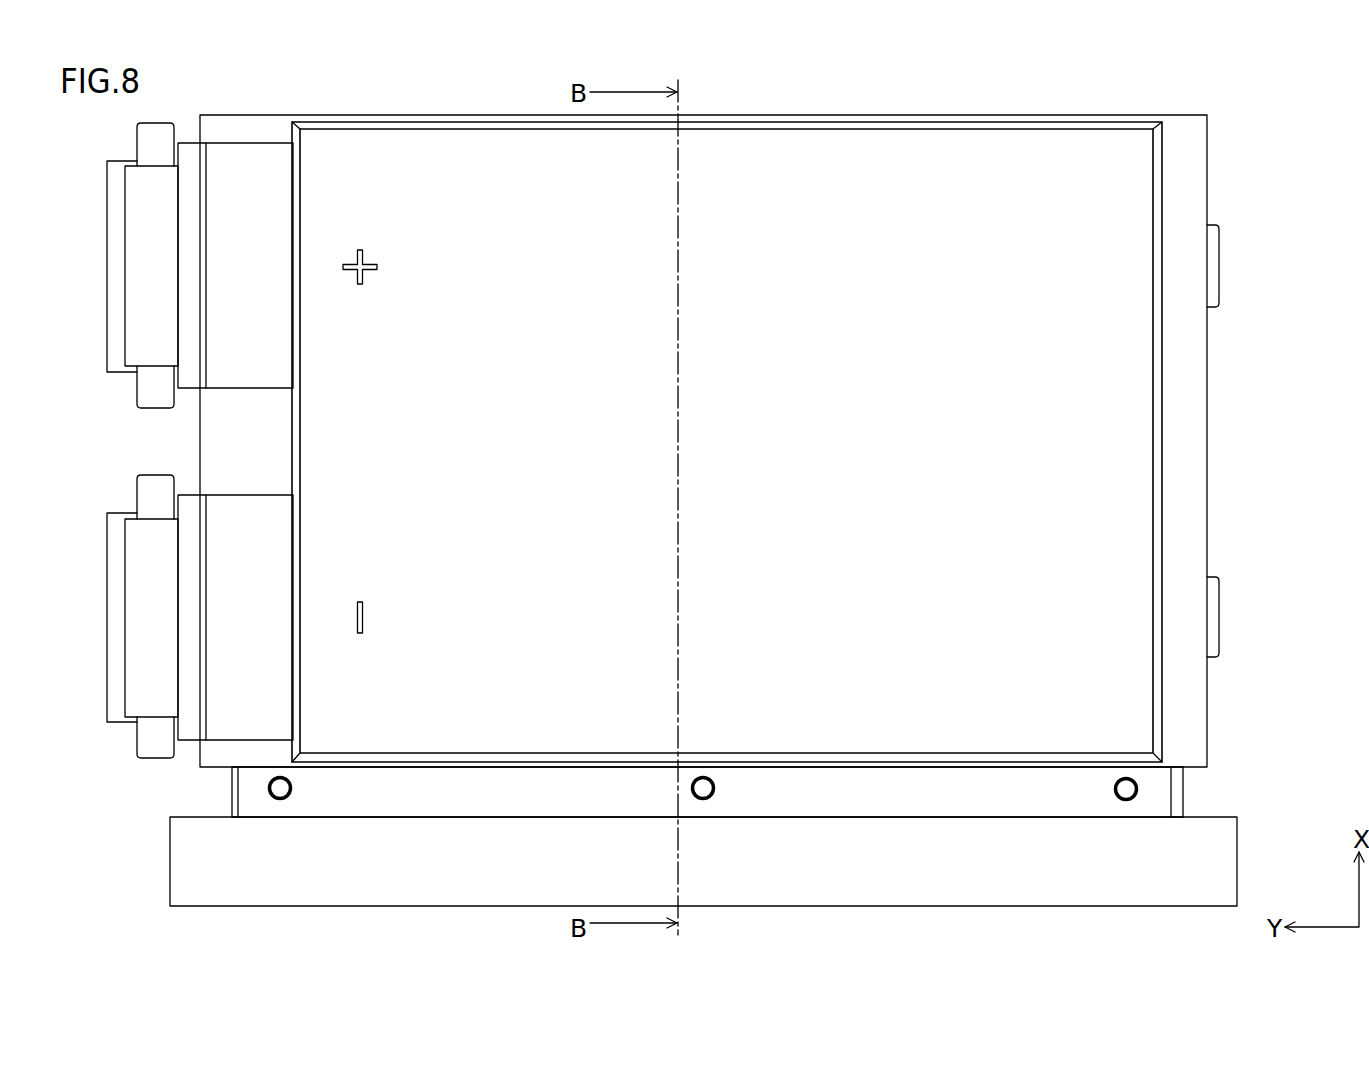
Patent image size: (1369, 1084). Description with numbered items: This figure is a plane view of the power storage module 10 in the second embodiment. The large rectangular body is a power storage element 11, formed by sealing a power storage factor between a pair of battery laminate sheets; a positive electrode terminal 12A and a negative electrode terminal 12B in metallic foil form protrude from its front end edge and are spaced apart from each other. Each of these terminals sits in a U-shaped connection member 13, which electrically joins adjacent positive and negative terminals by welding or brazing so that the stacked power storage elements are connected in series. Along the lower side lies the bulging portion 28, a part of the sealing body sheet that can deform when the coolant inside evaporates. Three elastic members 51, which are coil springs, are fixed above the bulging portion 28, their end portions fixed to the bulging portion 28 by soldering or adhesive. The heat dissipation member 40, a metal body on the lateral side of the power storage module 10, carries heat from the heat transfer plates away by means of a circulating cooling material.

The power storage module 10 is at (112, 826).
The power storage element 11 is at (822, 158).
The positive electrode terminal 12A is at (144, 240).
The negative electrode terminal 12B is at (143, 612).
The connection member 13 is at (118, 321).
The bulging portion 28 is at (1147, 802).
The heat dissipation member 40 is at (1033, 867).
The elastic member 51 is at (1140, 788).